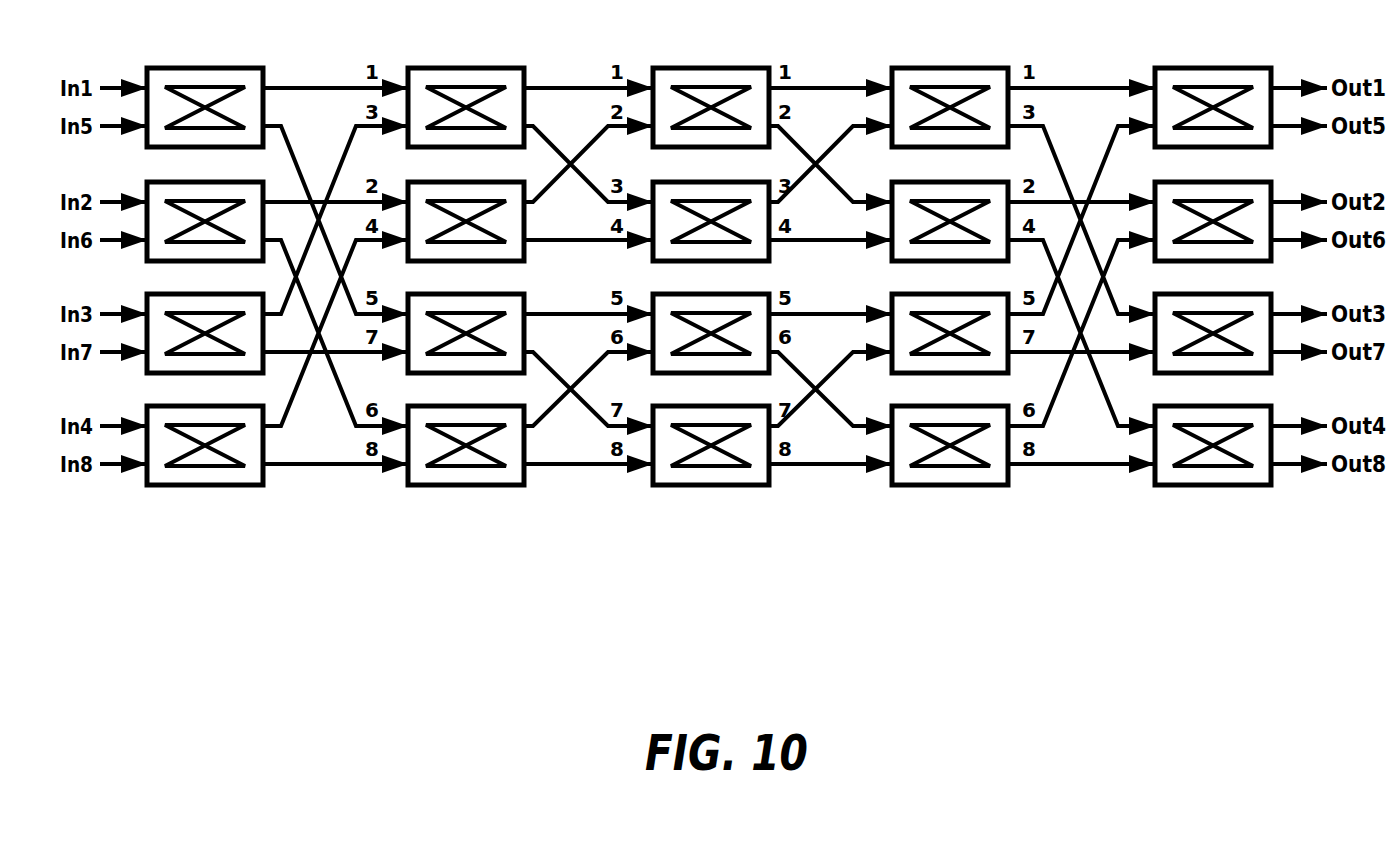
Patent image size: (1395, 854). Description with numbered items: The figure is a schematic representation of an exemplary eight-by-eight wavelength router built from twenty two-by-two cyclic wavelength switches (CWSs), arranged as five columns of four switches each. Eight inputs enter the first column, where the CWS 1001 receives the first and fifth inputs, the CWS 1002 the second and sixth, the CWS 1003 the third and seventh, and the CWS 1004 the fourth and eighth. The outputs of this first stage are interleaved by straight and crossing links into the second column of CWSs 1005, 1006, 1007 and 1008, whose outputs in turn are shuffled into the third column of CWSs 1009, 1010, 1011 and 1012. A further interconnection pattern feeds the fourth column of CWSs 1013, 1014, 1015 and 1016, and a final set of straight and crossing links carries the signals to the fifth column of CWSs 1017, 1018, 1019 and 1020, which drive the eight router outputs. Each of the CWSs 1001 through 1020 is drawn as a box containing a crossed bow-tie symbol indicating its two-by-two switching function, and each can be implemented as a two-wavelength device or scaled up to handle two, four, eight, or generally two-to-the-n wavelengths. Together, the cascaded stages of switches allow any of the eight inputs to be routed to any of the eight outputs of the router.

The 2×2 CWS 1001 is at (207, 68).
The 2×2 CWS 1002 is at (211, 182).
The 2×2 CWS 1003 is at (211, 294).
The 2×2 CWS 1004 is at (207, 485).
The 2×2 CWS 1005 is at (468, 68).
The 2×2 CWS 1006 is at (481, 182).
The 2×2 CWS 1007 is at (481, 294).
The 2×2 CWS 1008 is at (468, 485).
The 2×2 CWS 1009 is at (713, 68).
The 2×2 CWS 1010 is at (723, 182).
The 2×2 CWS 1011 is at (723, 294).
The 2×2 CWS 1012 is at (713, 485).
The 2×2 CWS 1013 is at (952, 68).
The 2×2 CWS 1014 is at (964, 182).
The 2×2 CWS 1015 is at (964, 294).
The 2×2 CWS 1016 is at (952, 485).
The 2×2 CWS 1017 is at (1215, 68).
The 2×2 CWS 1018 is at (1224, 182).
The 2×2 CWS 1019 is at (1224, 294).
The 2×2 CWS 1020 is at (1215, 485).